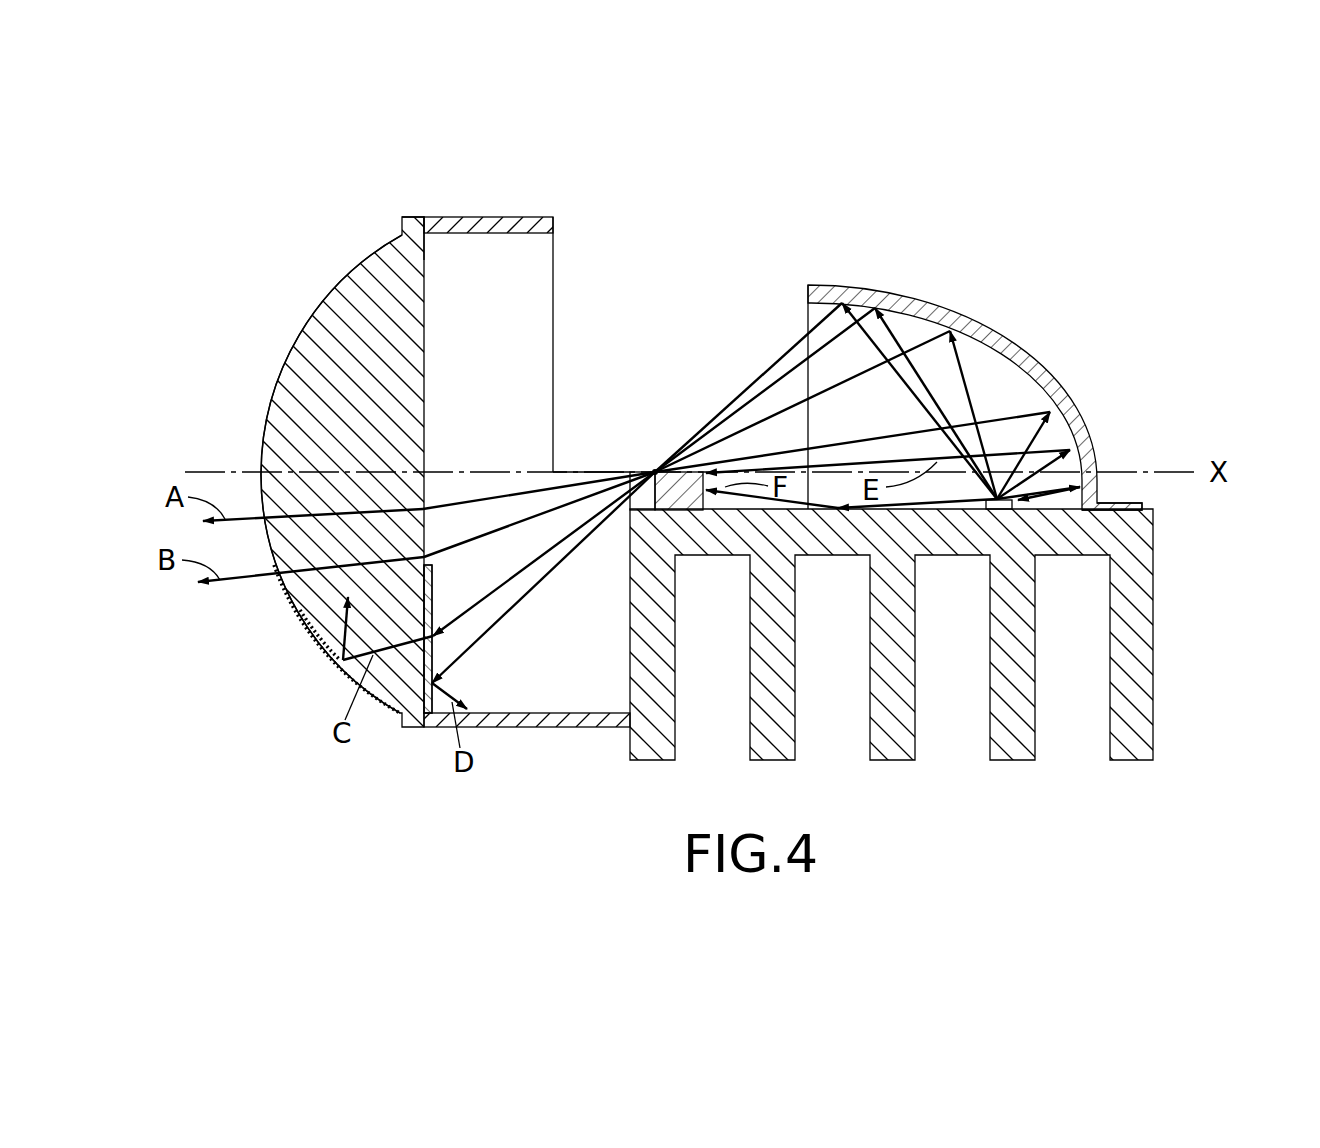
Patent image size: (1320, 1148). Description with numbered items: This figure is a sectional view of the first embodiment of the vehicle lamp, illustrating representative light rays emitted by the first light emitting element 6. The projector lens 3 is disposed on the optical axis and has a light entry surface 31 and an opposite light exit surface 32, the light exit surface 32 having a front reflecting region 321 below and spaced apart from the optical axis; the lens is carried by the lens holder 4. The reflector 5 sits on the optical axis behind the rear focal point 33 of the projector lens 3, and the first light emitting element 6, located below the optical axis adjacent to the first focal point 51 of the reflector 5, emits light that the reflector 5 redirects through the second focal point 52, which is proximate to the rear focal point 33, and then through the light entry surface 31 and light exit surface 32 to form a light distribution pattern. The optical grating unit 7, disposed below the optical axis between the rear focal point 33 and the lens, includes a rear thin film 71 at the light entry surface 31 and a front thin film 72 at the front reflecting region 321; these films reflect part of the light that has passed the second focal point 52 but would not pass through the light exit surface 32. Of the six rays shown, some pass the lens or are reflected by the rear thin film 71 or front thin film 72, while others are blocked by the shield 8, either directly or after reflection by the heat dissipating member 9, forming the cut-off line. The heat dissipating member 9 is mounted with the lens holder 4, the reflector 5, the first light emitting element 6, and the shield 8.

The projector lens 3 is at (380, 237).
The light entry surface 31 is at (424, 258).
The light exit surface 32 is at (347, 281).
The front reflecting region 321 is at (323, 615).
The lens holder 4 is at (519, 210).
The reflector 5 is at (955, 307).
The first focal point 51 is at (1007, 510).
The second focal point 52 is at (656, 478).
The first light emitting element 6 is at (1090, 496).
The optical grating unit 7 is at (380, 705).
The rear thin film 71 is at (433, 702).
The front thin film 72 is at (320, 637).
The shield 8 is at (650, 477).
The heat dissipating member 9 is at (1160, 697).
The rear focal point 33 is at (693, 470).